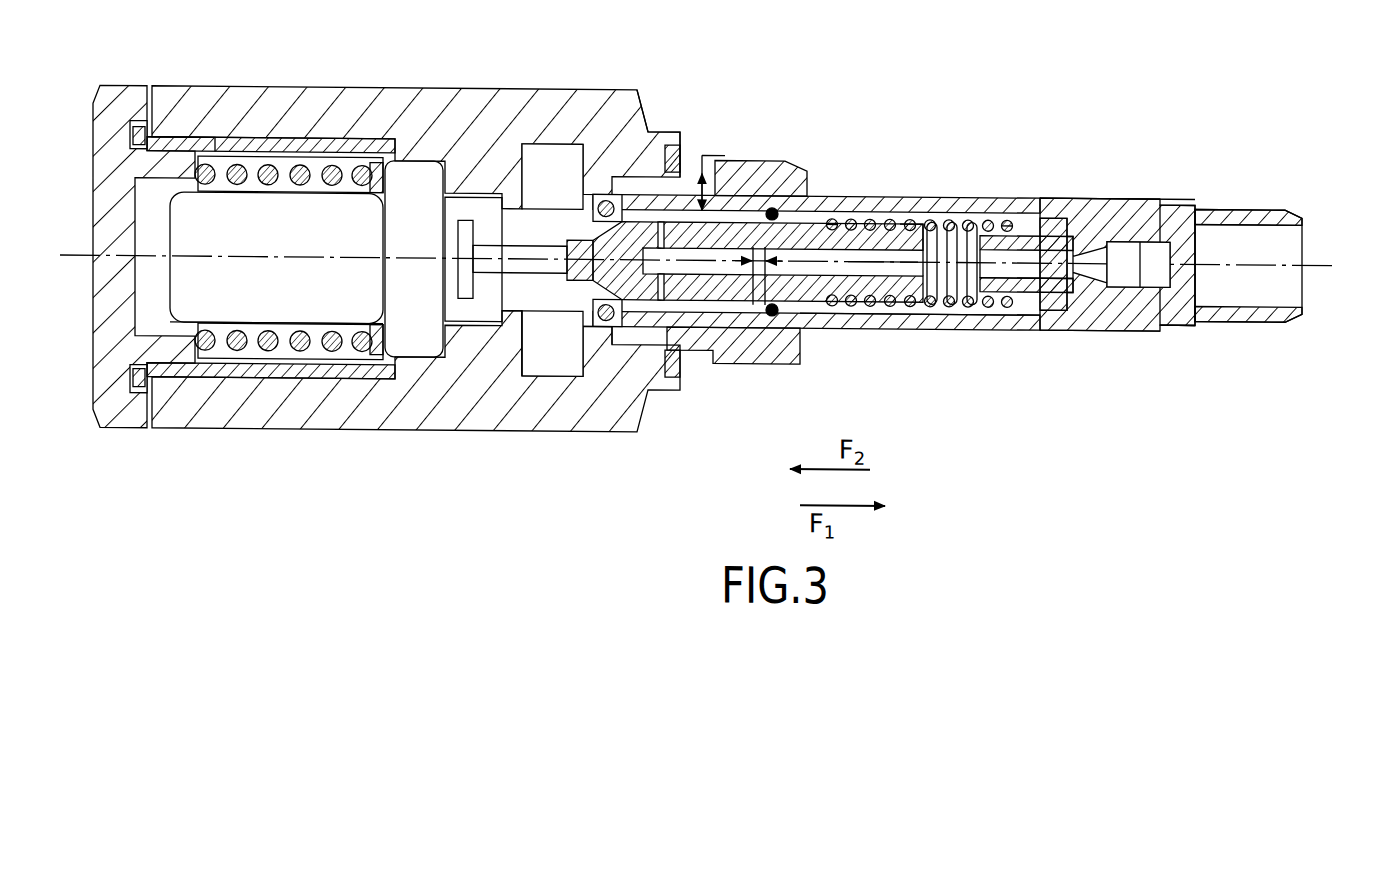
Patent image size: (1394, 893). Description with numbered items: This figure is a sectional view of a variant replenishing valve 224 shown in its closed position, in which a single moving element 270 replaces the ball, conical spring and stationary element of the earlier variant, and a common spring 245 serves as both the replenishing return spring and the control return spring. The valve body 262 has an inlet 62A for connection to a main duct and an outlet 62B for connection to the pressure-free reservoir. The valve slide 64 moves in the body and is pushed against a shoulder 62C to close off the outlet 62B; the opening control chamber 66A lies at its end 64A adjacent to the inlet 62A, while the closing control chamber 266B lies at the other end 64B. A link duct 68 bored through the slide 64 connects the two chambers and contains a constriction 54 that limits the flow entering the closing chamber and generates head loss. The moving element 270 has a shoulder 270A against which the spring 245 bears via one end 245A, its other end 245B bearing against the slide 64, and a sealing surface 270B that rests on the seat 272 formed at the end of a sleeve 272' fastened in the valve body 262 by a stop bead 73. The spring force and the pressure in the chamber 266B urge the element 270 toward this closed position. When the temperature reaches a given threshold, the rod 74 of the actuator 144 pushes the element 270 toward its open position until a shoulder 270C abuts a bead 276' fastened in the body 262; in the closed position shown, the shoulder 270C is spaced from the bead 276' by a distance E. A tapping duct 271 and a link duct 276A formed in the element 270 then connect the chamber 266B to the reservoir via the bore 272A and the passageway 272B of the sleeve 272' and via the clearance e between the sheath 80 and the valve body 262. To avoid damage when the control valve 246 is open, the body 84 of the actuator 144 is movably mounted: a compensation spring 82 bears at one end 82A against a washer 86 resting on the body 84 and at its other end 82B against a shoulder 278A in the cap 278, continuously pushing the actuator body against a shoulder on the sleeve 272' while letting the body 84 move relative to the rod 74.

The cap 278 is at (96, 352).
The shoulder 278A is at (198, 134).
The other end of the compensation spring 82B is at (258, 148).
The compensation spring 82 is at (300, 156).
The actuator 144 is at (338, 205).
The one end of the compensation spring 82A is at (366, 166).
The rod 74 is at (517, 245).
The sheath 80 is at (552, 140).
The stop bead 73 is at (604, 195).
The control valve 246 is at (690, 122).
The tapping duct 271 is at (671, 140).
The clearance e is at (714, 166).
The shoulder 270C is at (752, 175).
The replenishing valve 224 is at (1102, 168).
The one end of the common spring 245A is at (838, 214).
The link duct 276A is at (915, 234).
The closing control chamber 266B is at (962, 220).
The other end of the common spring 245B is at (1040, 214).
The valve body 262 is at (1112, 192).
The constriction 54 is at (1162, 250).
The opening control chamber 66A is at (1296, 238).
The inlet 62A is at (1296, 284).
The body of the actuator 84 is at (323, 315).
The washer 86 is at (380, 352).
The sleeve 272' is at (472, 392).
The bore 272A is at (578, 278).
The passageway 272B is at (597, 305).
The sealing surface 270B is at (633, 290).
The seat 272 is at (659, 324).
The bead 276' is at (763, 330).
The moving element 270 is at (800, 323).
The shoulder 270A is at (855, 307).
The common spring 245 is at (937, 305).
The other end of the slide 64B is at (1040, 290).
The link duct 68 is at (1025, 302).
The valve slide 64 is at (1050, 304).
The shoulder 62C is at (1090, 322).
The outlet 62B is at (1176, 316).
The end of the slide 64A is at (1190, 307).